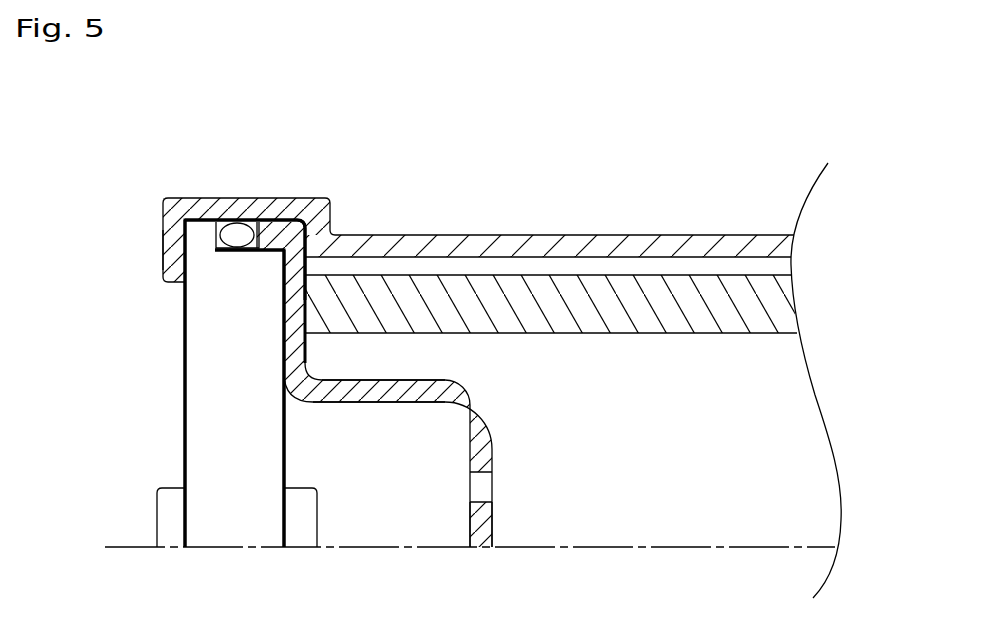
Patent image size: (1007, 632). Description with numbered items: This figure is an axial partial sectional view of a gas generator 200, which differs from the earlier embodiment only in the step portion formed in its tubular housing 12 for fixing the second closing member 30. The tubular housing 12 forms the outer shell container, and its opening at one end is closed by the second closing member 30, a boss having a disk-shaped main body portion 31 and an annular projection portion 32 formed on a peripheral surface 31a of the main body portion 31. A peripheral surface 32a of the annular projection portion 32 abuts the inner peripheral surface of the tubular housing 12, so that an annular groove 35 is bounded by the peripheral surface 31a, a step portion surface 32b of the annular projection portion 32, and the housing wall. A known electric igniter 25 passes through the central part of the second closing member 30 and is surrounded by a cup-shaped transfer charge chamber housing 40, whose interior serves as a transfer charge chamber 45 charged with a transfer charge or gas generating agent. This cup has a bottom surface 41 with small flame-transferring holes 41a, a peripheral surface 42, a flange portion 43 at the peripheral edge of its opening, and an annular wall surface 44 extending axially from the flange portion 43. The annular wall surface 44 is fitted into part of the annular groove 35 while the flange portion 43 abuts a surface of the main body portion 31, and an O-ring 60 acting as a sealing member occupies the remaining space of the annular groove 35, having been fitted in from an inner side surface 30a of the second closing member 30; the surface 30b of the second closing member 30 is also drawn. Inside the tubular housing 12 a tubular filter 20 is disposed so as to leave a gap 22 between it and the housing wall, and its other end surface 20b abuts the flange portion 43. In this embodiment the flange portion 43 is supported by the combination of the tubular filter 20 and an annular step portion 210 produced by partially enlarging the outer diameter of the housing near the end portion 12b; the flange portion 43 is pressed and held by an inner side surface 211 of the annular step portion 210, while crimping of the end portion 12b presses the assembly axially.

The gas generator 200 is at (503, 219).
The tubular housing 12 is at (575, 235).
The end portion 12b is at (173, 245).
The tubular filter 20 is at (580, 318).
The other end surface 20b is at (305, 300).
The gap 22 is at (662, 270).
The electric igniter 25 is at (310, 530).
The second closing member 30 is at (252, 417).
The inner side surface 30a is at (286, 433).
The inner surface of sleeve 30b is at (183, 453).
The main body portion 31 is at (192, 380).
The peripheral surface 31a is at (270, 252).
The annular projection portion 32 is at (203, 233).
The peripheral surface 32a is at (192, 218).
The step portion surface 32b is at (237, 220).
The annular groove 35 is at (217, 236).
The transfer charge chamber housing 40 is at (496, 419).
The bottom surface 41 is at (493, 522).
The flame-transferring holes 41a is at (483, 487).
The peripheral surface 42 is at (408, 402).
The flange portion 43 is at (307, 348).
The annular wall surface 44 is at (282, 220).
The transfer charge chamber 45 is at (405, 518).
The O-ring 60 is at (228, 235).
The annular step portion 210 is at (337, 207).
The inner side surface 211 is at (355, 235).